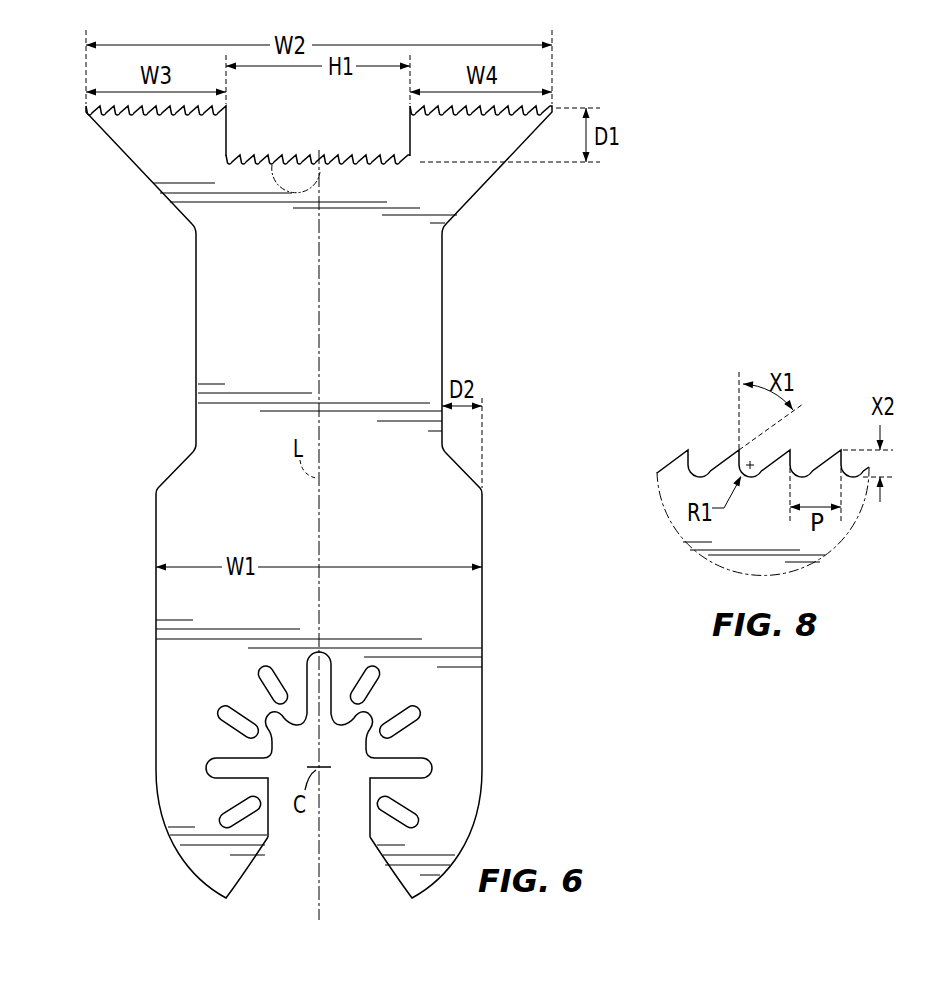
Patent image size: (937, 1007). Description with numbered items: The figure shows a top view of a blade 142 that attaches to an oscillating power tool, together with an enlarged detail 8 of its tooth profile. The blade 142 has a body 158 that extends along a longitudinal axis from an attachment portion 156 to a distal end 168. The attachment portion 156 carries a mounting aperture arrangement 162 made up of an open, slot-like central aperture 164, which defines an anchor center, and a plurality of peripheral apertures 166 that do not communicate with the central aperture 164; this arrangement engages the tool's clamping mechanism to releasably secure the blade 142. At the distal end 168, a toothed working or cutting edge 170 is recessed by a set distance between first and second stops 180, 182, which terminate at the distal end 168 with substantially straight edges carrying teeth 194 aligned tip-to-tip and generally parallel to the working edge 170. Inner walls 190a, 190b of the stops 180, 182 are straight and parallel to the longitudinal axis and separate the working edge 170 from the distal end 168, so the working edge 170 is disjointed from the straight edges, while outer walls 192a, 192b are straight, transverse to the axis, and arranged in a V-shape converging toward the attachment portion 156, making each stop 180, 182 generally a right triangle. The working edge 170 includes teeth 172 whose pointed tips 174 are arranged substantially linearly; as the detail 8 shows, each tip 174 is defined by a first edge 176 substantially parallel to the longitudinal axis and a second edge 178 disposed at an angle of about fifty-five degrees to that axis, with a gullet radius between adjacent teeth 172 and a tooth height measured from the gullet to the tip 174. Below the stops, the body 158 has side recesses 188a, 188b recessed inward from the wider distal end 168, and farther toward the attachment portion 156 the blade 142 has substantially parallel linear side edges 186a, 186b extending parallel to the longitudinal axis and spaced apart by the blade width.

In FIG. 6, the blade 142 is at (600, 72).
In FIG. 6, the attachment portion 156 is at (192, 765).
In FIG. 6, the body 158 is at (392, 312).
In FIG. 6, the mounting aperture arrangement 162 is at (440, 726).
In FIG. 6, the central aperture 164 is at (368, 802).
In FIG. 6, the peripheral apertures 166 is at (233, 713).
In FIG. 6, the distal end 168 is at (76, 100).
In FIG. 6, the working edge 170 is at (360, 163).
In FIG. 6, the teeth 172 is at (252, 164).
In FIG. 8, the teeth 172 is at (678, 466).
In FIG. 8, the pointed tip 174 is at (692, 451).
In FIG. 8, the first edge 176 is at (752, 454).
In FIG. 8, the second edge 178 is at (729, 450).
In FIG. 6, the first stop 180 is at (152, 136).
In FIG. 6, the second stop 182 is at (487, 136).
In FIG. 6, the side edge 186a is at (155, 540).
In FIG. 6, the side edge 186b is at (482, 540).
In FIG. 6, the side recess 188a is at (176, 330).
In FIG. 6, the side recess 188b is at (462, 330).
In FIG. 6, the inner wall 190a is at (230, 136).
In FIG. 6, the inner wall 190b is at (408, 136).
In FIG. 6, the outer wall 192a is at (148, 183).
In FIG. 6, the outer wall 192b is at (493, 182).
In FIG. 6, the teeth 194 is at (133, 108).
In FIG. 6, the section line 8- 8 is at (320, 156).